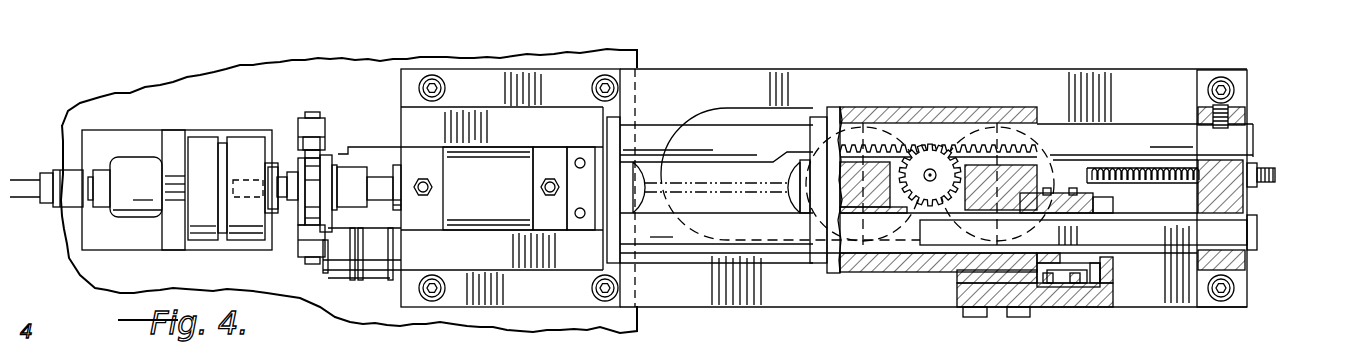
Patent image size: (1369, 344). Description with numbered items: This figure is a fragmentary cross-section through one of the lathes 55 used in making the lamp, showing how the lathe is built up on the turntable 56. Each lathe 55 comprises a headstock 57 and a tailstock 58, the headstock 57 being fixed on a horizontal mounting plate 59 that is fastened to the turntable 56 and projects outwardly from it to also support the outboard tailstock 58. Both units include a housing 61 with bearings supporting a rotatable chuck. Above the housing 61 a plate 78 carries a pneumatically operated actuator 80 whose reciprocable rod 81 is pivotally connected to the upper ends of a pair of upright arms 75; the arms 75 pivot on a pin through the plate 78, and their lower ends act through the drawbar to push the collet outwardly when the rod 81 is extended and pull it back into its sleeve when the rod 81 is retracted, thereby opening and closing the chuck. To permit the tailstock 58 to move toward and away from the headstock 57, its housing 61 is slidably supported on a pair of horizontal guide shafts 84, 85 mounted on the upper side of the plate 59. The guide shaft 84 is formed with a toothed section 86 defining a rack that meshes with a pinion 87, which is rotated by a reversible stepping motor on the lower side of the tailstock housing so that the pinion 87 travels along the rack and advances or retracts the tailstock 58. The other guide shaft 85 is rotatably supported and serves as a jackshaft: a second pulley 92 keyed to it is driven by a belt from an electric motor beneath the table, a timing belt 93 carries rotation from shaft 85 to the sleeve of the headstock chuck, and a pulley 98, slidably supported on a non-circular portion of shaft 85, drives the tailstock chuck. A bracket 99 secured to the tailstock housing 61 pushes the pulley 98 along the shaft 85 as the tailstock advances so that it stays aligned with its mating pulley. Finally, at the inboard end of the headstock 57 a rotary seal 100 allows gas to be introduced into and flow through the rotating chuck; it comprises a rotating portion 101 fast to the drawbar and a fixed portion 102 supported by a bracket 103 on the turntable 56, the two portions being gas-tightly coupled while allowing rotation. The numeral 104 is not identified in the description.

The lathe 55 is at (1268, 115).
The turntable 56 is at (82, 103).
The headstock 57 is at (419, 133).
The tailstock 58 is at (836, 279).
The mounting plate 59 is at (703, 300).
The housing 61 is at (490, 110).
The upright arms 75 is at (302, 123).
The plate 78 is at (350, 150).
The pneumatically operated actuator 80 is at (477, 230).
The reciprocable rod 81 is at (377, 183).
The guide shaft 84 is at (667, 127).
The guide shaft 85 is at (657, 252).
The toothed section 86 is at (891, 133).
The pinion 87 is at (940, 160).
The second pulley 92 is at (337, 280).
The timing belt 93 is at (380, 280).
The pulley 98 is at (1082, 290).
The bracket 99 is at (1117, 277).
The rotary seal 100 is at (207, 130).
The rotating portion 101 is at (247, 143).
The fixed portion 102 is at (203, 242).
The bracket 103 is at (164, 130).
The input shaft 104 is at (22, 180).